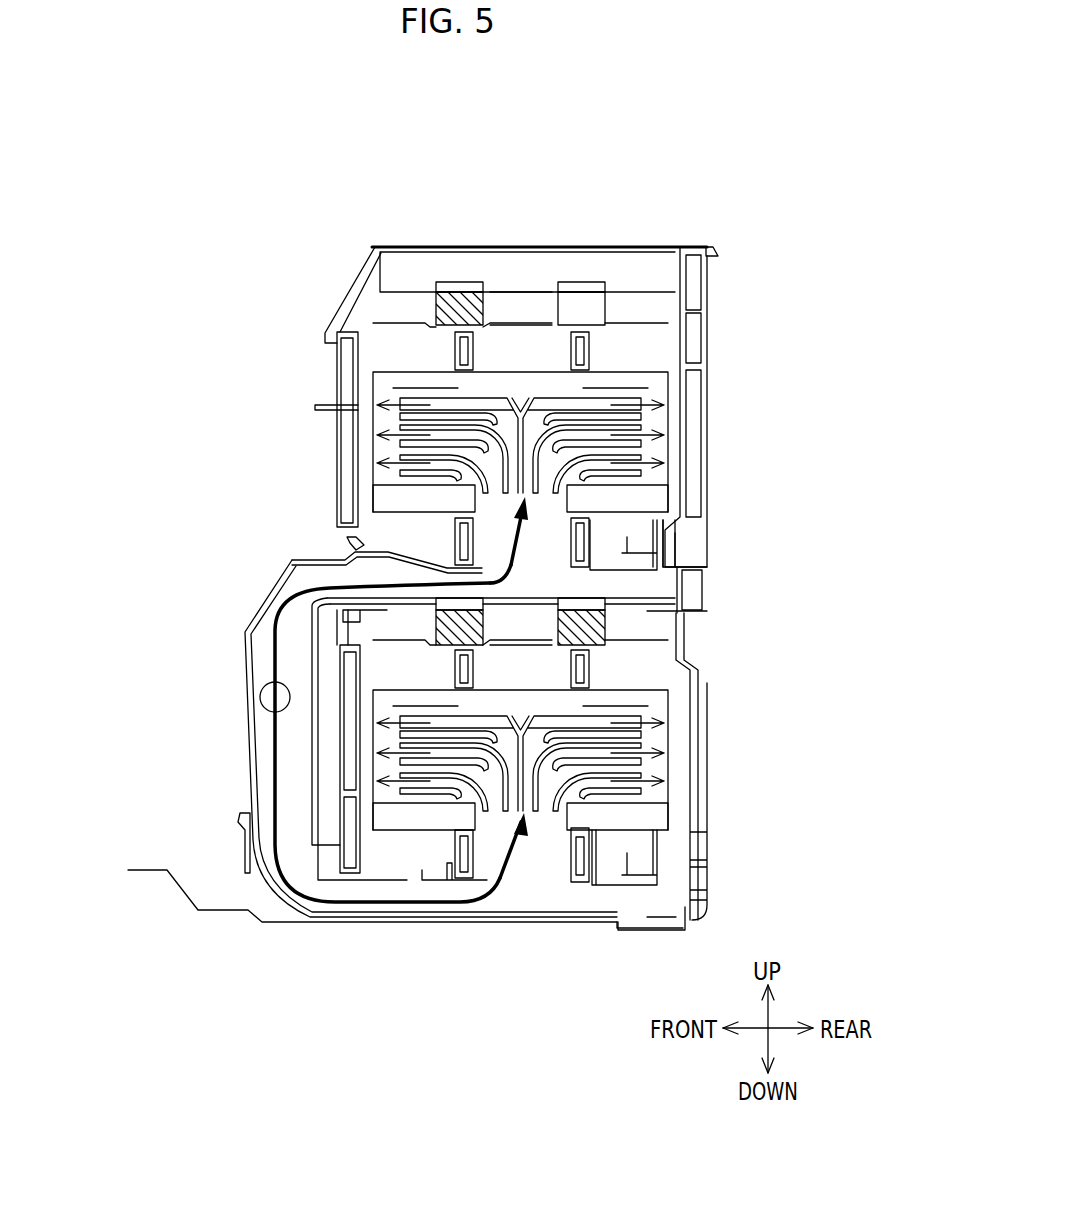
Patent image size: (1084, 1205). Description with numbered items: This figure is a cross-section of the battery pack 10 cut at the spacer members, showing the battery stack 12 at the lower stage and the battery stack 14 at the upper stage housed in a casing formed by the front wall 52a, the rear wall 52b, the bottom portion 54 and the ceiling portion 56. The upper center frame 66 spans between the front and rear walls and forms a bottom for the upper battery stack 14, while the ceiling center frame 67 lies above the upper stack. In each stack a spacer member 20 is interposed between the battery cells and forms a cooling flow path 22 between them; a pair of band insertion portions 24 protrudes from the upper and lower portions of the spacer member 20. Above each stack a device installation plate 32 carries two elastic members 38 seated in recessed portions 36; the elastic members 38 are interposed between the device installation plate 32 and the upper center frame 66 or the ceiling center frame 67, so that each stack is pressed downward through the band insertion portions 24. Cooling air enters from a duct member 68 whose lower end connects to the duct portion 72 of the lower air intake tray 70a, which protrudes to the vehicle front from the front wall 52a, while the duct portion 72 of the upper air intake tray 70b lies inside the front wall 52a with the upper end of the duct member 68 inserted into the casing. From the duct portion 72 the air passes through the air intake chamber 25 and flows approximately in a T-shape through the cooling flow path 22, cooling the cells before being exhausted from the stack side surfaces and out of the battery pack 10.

The battery pack 10 is at (717, 183).
The battery stack 12 is at (655, 686).
The battery stack 14 is at (655, 368).
The spacer member 20 is at (657, 393).
The cooling flow path 22 is at (642, 418).
The band insertion portion 24 is at (455, 349).
The air intake chamber 25 is at (557, 580).
The device installation plate 32 is at (525, 325).
The recessed portion 36 is at (482, 322).
The elastic member 38 is at (447, 312).
The front wall 52a is at (337, 464).
The rear wall 52b is at (708, 473).
The bottom portion 54 is at (666, 928).
The ceiling portion 56 is at (450, 246).
The upper center frame 66 is at (650, 616).
The ceiling center frame 67 is at (522, 306).
The duct member 68 is at (247, 720).
The lower air intake tray 70a is at (540, 918).
The upper air intake tray 70b is at (572, 582).
The duct portion 72 is at (346, 536).